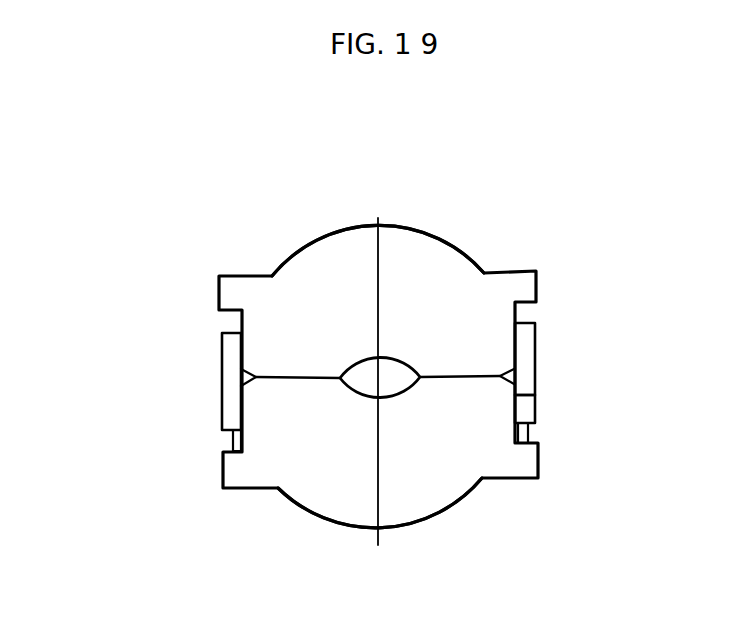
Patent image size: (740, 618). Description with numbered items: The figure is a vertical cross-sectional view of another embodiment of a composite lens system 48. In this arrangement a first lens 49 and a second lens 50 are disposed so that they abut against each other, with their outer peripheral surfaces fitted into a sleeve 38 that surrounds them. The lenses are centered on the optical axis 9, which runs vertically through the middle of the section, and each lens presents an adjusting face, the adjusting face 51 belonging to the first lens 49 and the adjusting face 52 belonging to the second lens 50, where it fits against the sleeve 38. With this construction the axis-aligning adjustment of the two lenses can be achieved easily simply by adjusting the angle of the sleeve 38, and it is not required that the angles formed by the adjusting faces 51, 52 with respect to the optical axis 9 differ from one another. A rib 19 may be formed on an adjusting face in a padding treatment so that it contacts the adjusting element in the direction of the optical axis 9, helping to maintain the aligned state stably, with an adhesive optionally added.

The composite lens system 48 is at (107, 252).
The second lens 50 is at (313, 243).
The first lens 49 is at (290, 502).
The optical axis 9 is at (378, 218).
The sleeve 38 is at (222, 364).
The adjusting face 52 is at (530, 316).
The adjusting face 51 is at (536, 398).
The rib 19 is at (532, 432).